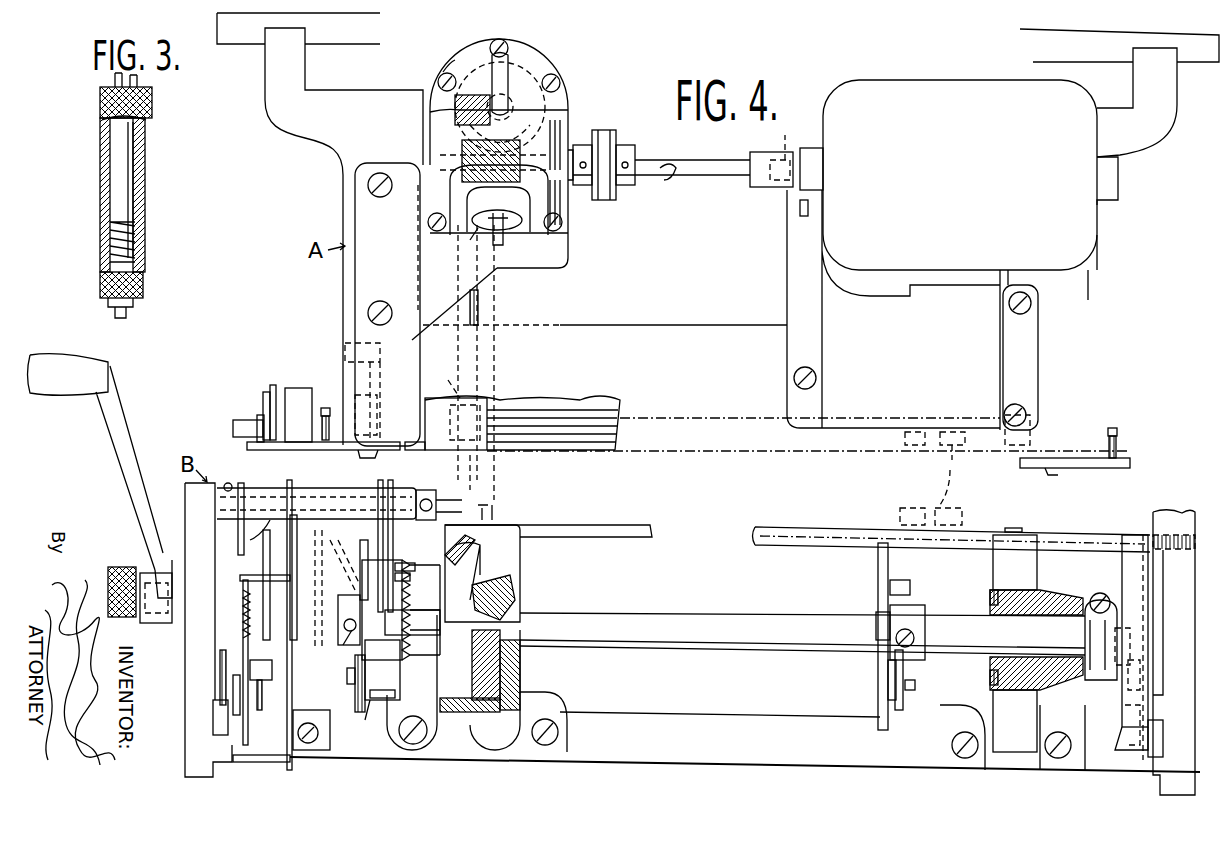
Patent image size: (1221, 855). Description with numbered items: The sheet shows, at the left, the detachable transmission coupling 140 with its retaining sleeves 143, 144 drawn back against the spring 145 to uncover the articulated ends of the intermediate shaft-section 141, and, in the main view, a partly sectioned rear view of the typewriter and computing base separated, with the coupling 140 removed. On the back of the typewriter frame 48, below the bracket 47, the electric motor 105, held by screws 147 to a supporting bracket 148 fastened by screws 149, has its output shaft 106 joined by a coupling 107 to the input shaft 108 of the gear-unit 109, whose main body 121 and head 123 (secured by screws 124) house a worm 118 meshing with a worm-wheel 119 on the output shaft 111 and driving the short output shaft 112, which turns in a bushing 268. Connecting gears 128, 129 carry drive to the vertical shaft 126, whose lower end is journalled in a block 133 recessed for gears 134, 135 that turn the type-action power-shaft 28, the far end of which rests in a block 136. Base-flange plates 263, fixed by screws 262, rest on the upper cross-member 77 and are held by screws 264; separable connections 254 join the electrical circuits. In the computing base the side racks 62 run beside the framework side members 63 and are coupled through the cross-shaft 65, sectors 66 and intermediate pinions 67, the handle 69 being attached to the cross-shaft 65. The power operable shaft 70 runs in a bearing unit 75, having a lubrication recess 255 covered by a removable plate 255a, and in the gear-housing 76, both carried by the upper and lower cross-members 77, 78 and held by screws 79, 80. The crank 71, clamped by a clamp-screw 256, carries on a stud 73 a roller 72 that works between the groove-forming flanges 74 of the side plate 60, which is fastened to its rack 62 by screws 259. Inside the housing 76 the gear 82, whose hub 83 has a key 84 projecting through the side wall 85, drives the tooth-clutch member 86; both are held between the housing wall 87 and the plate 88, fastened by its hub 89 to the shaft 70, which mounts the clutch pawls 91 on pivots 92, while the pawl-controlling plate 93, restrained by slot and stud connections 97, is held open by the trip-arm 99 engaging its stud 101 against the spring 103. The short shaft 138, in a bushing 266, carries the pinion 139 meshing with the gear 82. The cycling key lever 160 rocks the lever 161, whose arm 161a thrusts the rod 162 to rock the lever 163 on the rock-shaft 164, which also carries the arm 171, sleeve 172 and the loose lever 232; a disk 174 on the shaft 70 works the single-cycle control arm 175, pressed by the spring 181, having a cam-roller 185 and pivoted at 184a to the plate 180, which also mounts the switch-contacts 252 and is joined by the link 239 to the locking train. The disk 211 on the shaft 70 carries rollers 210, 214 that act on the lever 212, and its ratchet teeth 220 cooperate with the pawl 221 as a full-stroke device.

In FIG. 3, the intermediate shaft-section 141 is at (112, 148).
In FIG. 3, the retaining sleeve 143 is at (141, 118).
In FIG. 3, the retaining sleeve 144 is at (144, 160).
In FIG. 3, the spring 145 is at (118, 222).
In FIG. 4, the bracket arm 47 is at (320, 229).
In FIG. 4, the worm-wheel 119 is at (540, 62).
In FIG. 4, the screws 124 is at (462, 67).
In FIG. 4, the output shaft 111 is at (506, 100).
In FIG. 4, the connecting gear 129 is at (489, 99).
In FIG. 4, the connecting gear 128 is at (492, 130).
In FIG. 4, the head 123 is at (440, 112).
In FIG. 4, the worm 118 is at (462, 152).
In FIG. 4, the gear-unit 109 is at (573, 250).
In FIG. 4, the output shaft 112 is at (503, 235).
In FIG. 4, the bushing 268 is at (470, 240).
In FIG. 4, the main body 121 is at (500, 275).
In FIG. 4, the vertical shaft 126 is at (458, 305).
In FIG. 4, the input shaft 108 is at (575, 150).
In FIG. 4, the coupling 107 is at (612, 135).
In FIG. 4, the output shaft 106 is at (782, 155).
In FIG. 4, the electric motor 105 is at (948, 175).
In FIG. 4, the screws 147 is at (800, 208).
In FIG. 4, the supporting bracket 148 is at (785, 310).
In FIG. 4, the screws 149 is at (1042, 300).
In FIG. 4, the typewriter frame 48 is at (640, 325).
In FIG. 4, the coupling device 140 is at (500, 362).
In FIG. 4, the cycling key lever 160 is at (380, 368).
In FIG. 4, the lever 161 is at (330, 390).
In FIG. 4, the arm 161a is at (278, 385).
In FIG. 4, the thrust rod 162 is at (264, 412).
In FIG. 4, the screws 264 is at (1112, 415).
In FIG. 4, the base-flange plates 263 is at (1075, 468).
In FIG. 4, the screws 262 is at (372, 462).
In FIG. 4, the boss or block 133 is at (445, 455).
In FIG. 4, the gear 135 is at (453, 404).
In FIG. 4, the gear 134 is at (476, 475).
In FIG. 4, the type-action power-shaft 28 is at (605, 400).
In FIG. 4, the boss or block 136 is at (1042, 418).
In FIG. 4, the separable connections 254 is at (932, 478).
In FIG. 4, the handle 69 is at (128, 468).
In FIG. 4, the sectors 66 is at (218, 628).
In FIG. 4, the side members 63 is at (1185, 690).
In FIG. 4, the cross-shaft 65 is at (240, 578).
In FIG. 4, the intermediate pinions 67 is at (220, 684).
In FIG. 4, the side racks 62 is at (1160, 745).
In FIG. 4, the link 239 is at (233, 715).
In FIG. 4, the single-cycle control arm 175 is at (248, 725).
In FIG. 4, the pivot 184a is at (235, 762).
In FIG. 4, the plate 180 is at (294, 765).
In FIG. 4, the spring 181 is at (255, 600).
In FIG. 4, the cam-roller 185 is at (282, 655).
In FIG. 4, the rock-shaft 164 is at (333, 498).
In FIG. 4, the lever 163 is at (232, 483).
In FIG. 4, the arm 171 is at (262, 520).
In FIG. 4, the sleeve 172 is at (293, 515).
In FIG. 4, the disk 174 is at (280, 550).
In FIG. 4, the lever 232 is at (419, 485).
In FIG. 4, the trip-arm 99 is at (362, 540).
In FIG. 4, the switch-contacts 252 is at (338, 615).
In FIG. 4, the clutch pawls 91 is at (385, 715).
In FIG. 4, the stud 101 is at (428, 565).
In FIG. 4, the spring 103 is at (410, 585).
In FIG. 4, the key 84 is at (436, 622).
In FIG. 4, the gear-housing 76 is at (520, 575).
In FIG. 4, the side wall 85 is at (462, 548).
In FIG. 4, the pinion 139 is at (515, 600).
In FIG. 4, the short shaft 138 is at (495, 515).
In FIG. 4, the bushing 266 is at (530, 524).
In FIG. 4, the upper cross-member 77 is at (608, 518).
In FIG. 4, the hub 83 is at (474, 665).
In FIG. 4, the gear housing wall 87 is at (520, 660).
In FIG. 4, the tooth-clutch member 86 is at (428, 675).
In FIG. 4, the pivots 92 is at (415, 692).
In FIG. 4, the plate 88 is at (360, 722).
In FIG. 4, the pawl-controlling plate 93 is at (355, 712).
In FIG. 4, the slot and stud connections 97 is at (352, 688).
In FIG. 4, the hub 89 is at (338, 651).
In FIG. 4, the gear 82 is at (453, 682).
In FIG. 4, the screws 80 is at (972, 712).
In FIG. 4, the power operable shaft 70 is at (680, 614).
In FIG. 4, the lower cross-member 78 is at (615, 705).
In FIG. 4, the ratchet teeth 220 is at (878, 702).
In FIG. 4, the disk 211 is at (878, 680).
In FIG. 4, the roller 210 is at (898, 578).
In FIG. 4, the pawl 221 is at (876, 614).
In FIG. 4, the lever 212 is at (903, 705).
In FIG. 4, the roller 214 is at (915, 688).
In FIG. 4, the screws 79 is at (1015, 526).
In FIG. 4, the side plate 60 is at (1157, 528).
In FIG. 4, the bearing unit 75 is at (1050, 590).
In FIG. 4, the removable plate 255a is at (990, 606).
In FIG. 4, the recess 255 is at (990, 665).
In FIG. 4, the crank 71 is at (1098, 682).
In FIG. 4, the clamp-screw 256 is at (1108, 595).
In FIG. 4, the roller 72 is at (1131, 647).
In FIG. 4, the stud 73 is at (1136, 678).
In FIG. 4, the screws 259 is at (1136, 721).
In FIG. 4, the groove-forming flanges 74 is at (1122, 758).